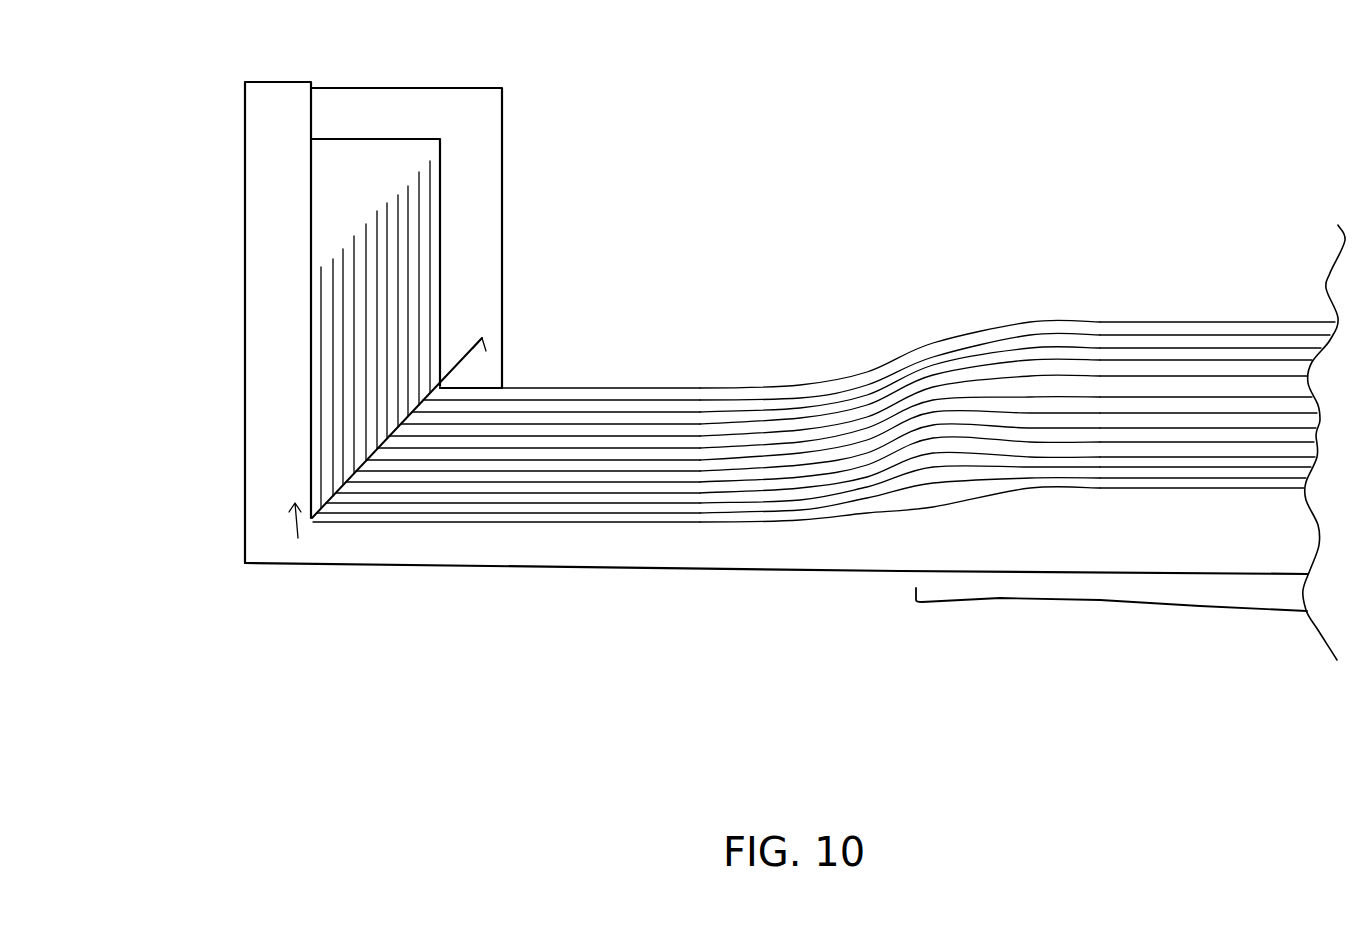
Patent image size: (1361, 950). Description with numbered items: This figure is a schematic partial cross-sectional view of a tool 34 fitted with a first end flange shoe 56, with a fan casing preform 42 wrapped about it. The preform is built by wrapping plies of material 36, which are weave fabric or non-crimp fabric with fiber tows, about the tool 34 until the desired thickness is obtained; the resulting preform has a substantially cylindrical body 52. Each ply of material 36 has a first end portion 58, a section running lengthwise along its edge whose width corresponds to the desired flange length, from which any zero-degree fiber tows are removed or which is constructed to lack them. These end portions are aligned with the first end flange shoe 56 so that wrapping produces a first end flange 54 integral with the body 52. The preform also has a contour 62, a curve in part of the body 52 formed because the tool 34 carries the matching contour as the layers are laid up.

The tool 34 is at (418, 542).
The ply of material 36 is at (824, 303).
The fan casing preform 42 is at (957, 330).
The substantially cylindrical body 52 is at (977, 432).
The first end flange 54 is at (347, 338).
The first end flange shoe 56 is at (381, 114).
The first end portion 58 is at (470, 372).
The contour 62 is at (1143, 605).